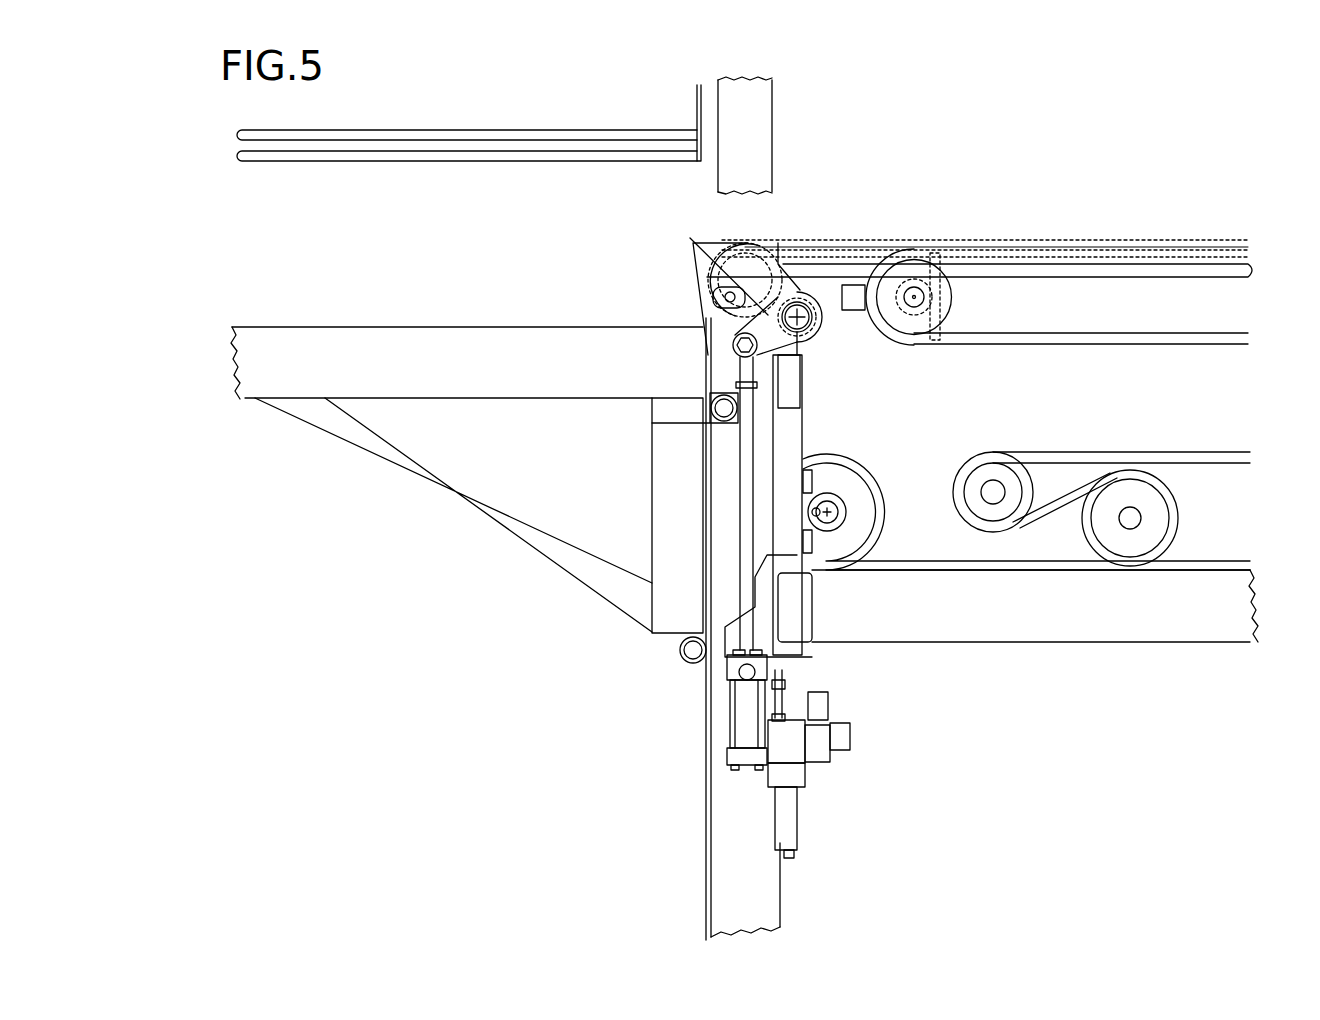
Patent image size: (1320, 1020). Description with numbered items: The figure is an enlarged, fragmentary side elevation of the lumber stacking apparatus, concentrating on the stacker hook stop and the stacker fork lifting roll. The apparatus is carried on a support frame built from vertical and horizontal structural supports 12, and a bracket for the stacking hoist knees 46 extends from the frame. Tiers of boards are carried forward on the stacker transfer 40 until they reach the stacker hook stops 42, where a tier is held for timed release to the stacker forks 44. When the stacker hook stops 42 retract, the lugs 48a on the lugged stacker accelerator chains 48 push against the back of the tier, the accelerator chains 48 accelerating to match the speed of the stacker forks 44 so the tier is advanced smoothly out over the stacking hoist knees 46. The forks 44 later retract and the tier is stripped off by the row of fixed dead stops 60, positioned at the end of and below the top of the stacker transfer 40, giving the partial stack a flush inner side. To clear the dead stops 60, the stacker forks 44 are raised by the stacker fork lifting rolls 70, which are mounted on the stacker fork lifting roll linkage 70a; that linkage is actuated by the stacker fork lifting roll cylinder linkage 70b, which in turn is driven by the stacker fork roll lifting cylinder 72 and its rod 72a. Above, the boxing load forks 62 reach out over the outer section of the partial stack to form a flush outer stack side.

The structural supports 12 is at (1137, 618).
The stacker transfer 40 is at (1077, 240).
The stacker hook stops 42 is at (720, 243).
The stacker forks 44 is at (813, 266).
The stacking hoist knees 46 is at (458, 358).
The stacker accelerator chains 48 is at (1083, 343).
The accelerator chain lugs 48a is at (857, 285).
The fixed dead stops 60 is at (697, 267).
The boxing load forks 62 is at (467, 128).
The stacker fork lifting rolls 70 is at (710, 308).
The stacker fork lifting roll linkage 70a is at (753, 302).
The stacker fork lifting roll cylinder linkage 70b is at (770, 347).
The stacker fork roll lifting cylinder 72 is at (770, 765).
The cylinder rod 72a is at (747, 457).